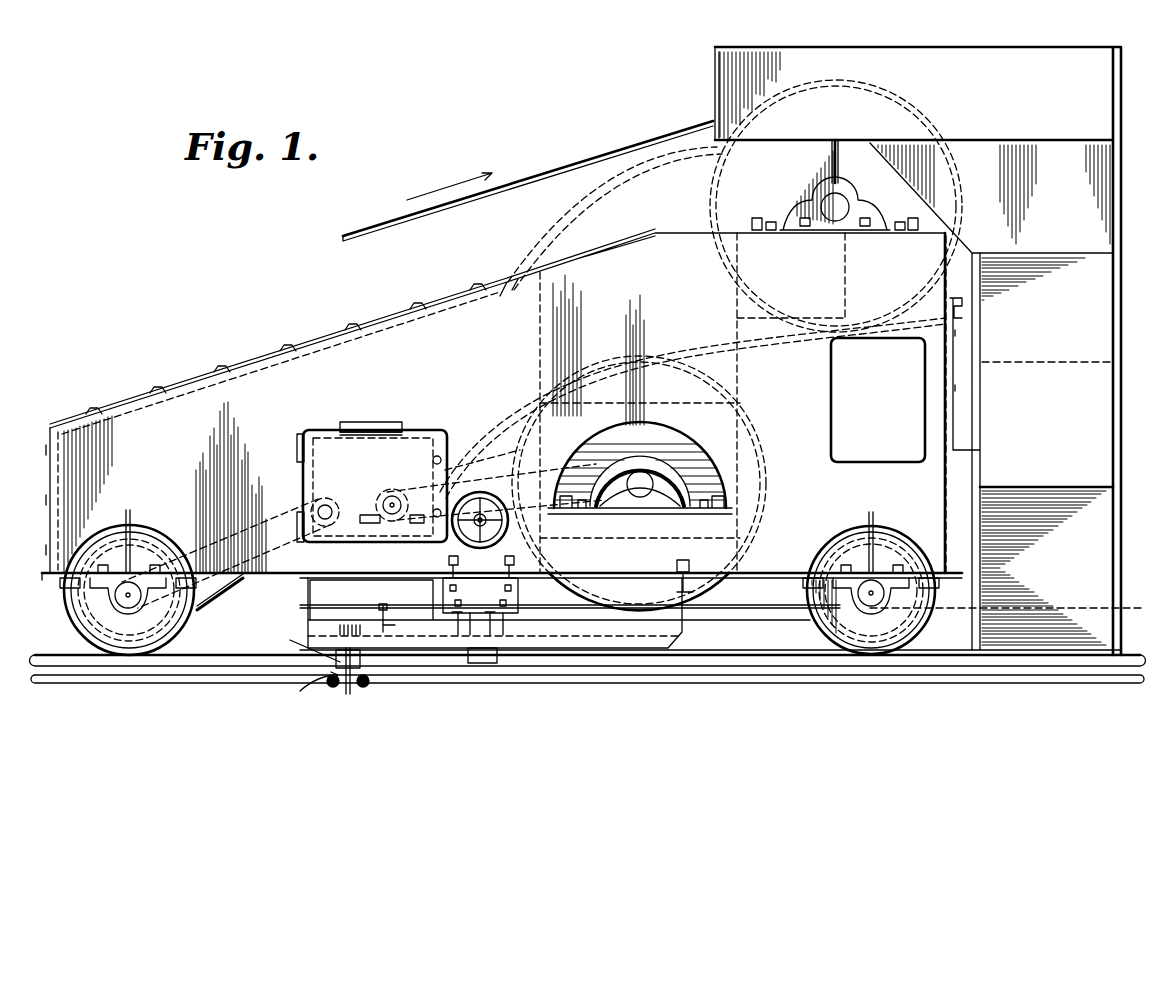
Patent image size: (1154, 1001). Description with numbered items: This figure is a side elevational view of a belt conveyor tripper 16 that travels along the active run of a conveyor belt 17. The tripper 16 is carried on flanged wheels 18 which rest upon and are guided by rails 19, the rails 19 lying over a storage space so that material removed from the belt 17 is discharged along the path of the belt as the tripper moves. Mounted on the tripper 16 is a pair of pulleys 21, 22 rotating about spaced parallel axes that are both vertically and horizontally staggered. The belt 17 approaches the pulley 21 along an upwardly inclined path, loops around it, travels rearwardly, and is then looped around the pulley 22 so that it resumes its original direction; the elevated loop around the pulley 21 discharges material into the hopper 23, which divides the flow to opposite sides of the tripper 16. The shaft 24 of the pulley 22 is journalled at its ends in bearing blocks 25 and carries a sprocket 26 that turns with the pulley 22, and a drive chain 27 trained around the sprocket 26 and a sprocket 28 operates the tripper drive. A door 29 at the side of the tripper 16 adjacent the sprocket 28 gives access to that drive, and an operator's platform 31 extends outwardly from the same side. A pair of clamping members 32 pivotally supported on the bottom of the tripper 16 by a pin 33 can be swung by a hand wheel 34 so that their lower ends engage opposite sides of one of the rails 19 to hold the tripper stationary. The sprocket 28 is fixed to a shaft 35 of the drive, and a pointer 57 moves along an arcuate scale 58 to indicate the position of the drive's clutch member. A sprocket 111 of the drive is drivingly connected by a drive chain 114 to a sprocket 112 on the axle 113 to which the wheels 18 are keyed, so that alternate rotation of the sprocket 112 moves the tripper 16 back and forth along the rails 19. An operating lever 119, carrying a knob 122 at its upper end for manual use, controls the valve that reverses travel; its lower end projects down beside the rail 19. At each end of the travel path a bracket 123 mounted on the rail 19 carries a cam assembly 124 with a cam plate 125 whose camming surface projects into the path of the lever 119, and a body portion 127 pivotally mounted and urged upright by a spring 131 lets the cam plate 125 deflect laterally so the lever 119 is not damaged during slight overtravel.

The belt conveyor tripper 16 is at (400, 301).
The conveyor belt 17 is at (578, 163).
The flanged wheels 18 is at (173, 614).
The rails 19 is at (708, 668).
The pulley 21 is at (712, 180).
The pulley 22 is at (765, 505).
The hopper 23 is at (918, 56).
The shaft 24 is at (559, 479).
The bearing blocks 25 is at (656, 500).
The sprocket 26 is at (606, 479).
The drive chain 27 is at (498, 460).
The sprocket 28 is at (446, 470).
The door 29 is at (372, 467).
The operator's platform 31 is at (556, 650).
The clamping members 32 is at (479, 664).
The pin 33 is at (520, 617).
The hand wheel 34 is at (471, 538).
The shaft 35 is at (390, 494).
The pointer 57 is at (376, 424).
The arcuate scale 58 is at (360, 425).
The sprocket 111 is at (327, 502).
The sprocket 112 is at (205, 612).
The axle 113 is at (128, 600).
The drive chain 114 is at (228, 586).
The operating lever 119 is at (386, 625).
The knob 122 is at (383, 612).
The bracket 123 is at (356, 690).
The cam assembly 124 is at (310, 691).
The cam plate 125 is at (318, 652).
The body portion 127 is at (368, 680).
The spring 131 is at (345, 693).